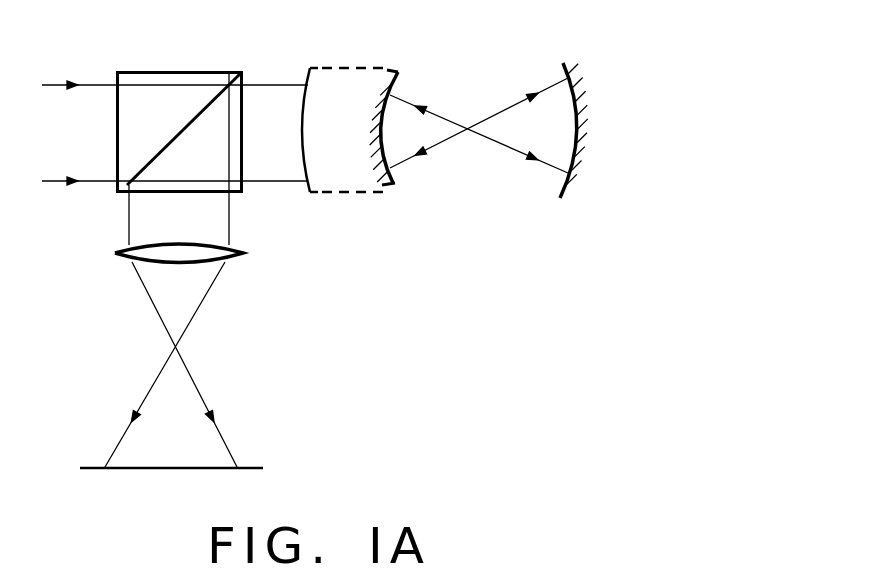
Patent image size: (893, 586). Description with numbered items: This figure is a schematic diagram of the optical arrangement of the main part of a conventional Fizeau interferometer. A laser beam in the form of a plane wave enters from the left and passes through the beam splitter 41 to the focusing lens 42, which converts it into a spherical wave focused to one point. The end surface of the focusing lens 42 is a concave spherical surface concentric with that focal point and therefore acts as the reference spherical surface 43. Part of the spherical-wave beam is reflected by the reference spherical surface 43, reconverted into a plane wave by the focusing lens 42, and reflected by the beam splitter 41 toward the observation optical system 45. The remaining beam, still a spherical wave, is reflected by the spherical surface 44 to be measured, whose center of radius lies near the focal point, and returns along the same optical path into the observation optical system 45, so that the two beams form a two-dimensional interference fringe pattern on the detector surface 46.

The beam splitter 41 is at (213, 92).
The focusing lens 42 is at (338, 194).
The reference spherical surface 43 is at (394, 75).
The spherical surface to be measured 44 is at (565, 68).
The observation optical system 45 is at (118, 252).
The detector surface 46 is at (255, 465).